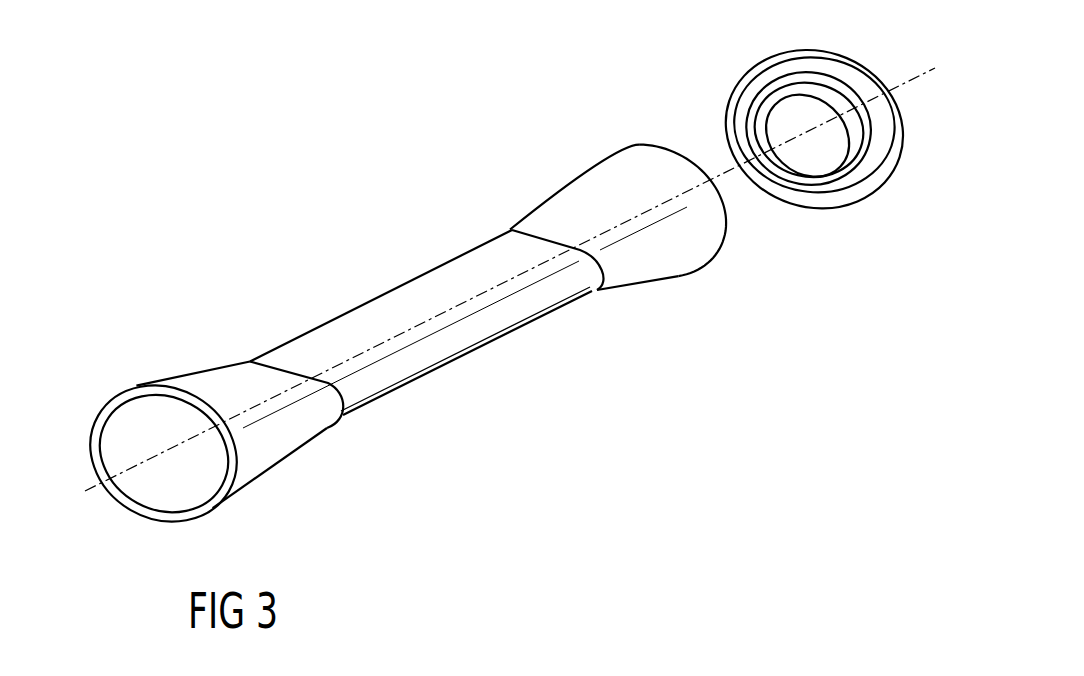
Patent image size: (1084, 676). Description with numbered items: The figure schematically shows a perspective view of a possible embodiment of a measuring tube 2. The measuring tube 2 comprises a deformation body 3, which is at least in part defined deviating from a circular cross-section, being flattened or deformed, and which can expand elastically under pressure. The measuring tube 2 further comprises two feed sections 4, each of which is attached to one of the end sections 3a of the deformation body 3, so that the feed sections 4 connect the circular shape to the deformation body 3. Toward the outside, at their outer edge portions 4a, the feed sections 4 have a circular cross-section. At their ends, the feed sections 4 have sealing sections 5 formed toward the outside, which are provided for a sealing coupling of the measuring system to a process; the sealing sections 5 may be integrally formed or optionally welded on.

The measuring tube 2 is at (437, 206).
The deformation body 3 is at (382, 312).
The end sections 3a is at (283, 360).
The feed sections 4 is at (216, 386).
The outer edge portions 4a is at (133, 384).
The sealing sections 5 is at (848, 210).